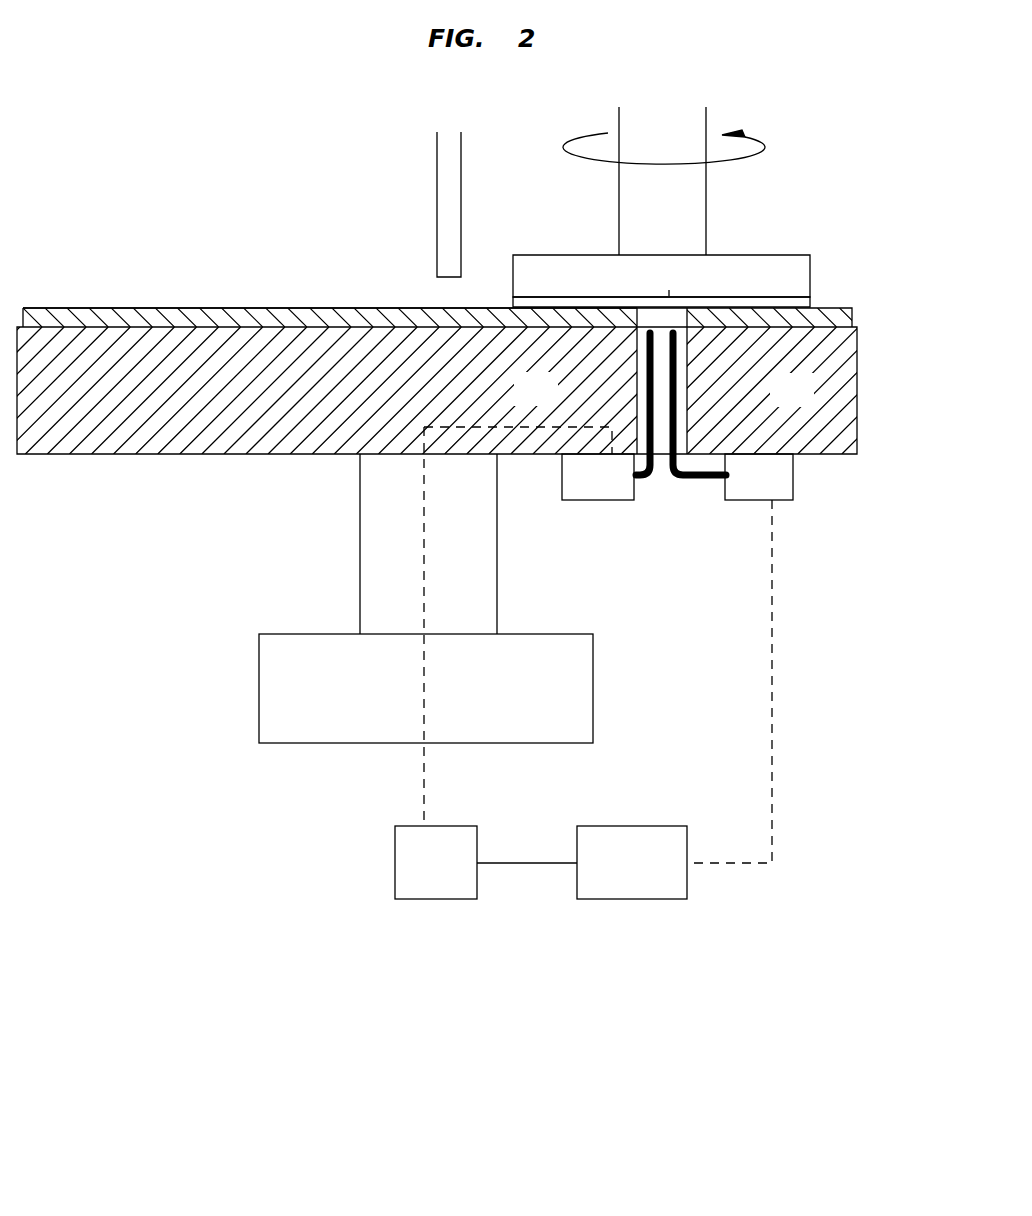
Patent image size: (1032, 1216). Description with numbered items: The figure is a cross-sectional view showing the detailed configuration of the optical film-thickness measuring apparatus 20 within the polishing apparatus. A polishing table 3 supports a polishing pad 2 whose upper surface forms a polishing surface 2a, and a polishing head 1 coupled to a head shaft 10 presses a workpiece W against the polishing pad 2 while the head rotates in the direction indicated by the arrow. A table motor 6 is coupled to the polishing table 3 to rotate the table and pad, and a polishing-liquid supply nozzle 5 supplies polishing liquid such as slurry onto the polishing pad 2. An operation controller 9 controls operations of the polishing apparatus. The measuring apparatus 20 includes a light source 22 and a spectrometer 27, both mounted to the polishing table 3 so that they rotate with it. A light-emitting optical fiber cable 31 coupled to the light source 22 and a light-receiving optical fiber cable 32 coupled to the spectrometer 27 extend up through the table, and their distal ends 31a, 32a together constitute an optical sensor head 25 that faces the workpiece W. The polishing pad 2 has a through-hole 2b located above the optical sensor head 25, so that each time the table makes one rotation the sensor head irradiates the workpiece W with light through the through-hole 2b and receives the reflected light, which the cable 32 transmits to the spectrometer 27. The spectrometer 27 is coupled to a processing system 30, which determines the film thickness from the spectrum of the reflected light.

The polishing head 1 is at (798, 255).
The polishing pad 2 is at (188, 308).
The polishing surface 2a is at (103, 308).
The through-hole 2b is at (657, 315).
The polishing table 3 is at (113, 454).
The polishing-liquid supply nozzle 5 is at (437, 187).
The table motor 6 is at (593, 707).
The operation controller 9 is at (638, 899).
The head shaft 10 is at (618, 120).
The optical film-thickness measuring apparatus 20 is at (812, 620).
The light source 22 is at (793, 478).
The optical sensor head 25 is at (670, 298).
The spectrometer 27 is at (596, 500).
The processing system 30 is at (395, 852).
The light-emitting optical fiber cable 31 is at (676, 383).
The distal end of the light-emitting optical fiber cable 31a is at (674, 325).
The light-receiving optical fiber cable 32 is at (647, 385).
The distal end of the light-receiving optical fiber cable 32a is at (647, 326).
The workpiece W is at (812, 297).